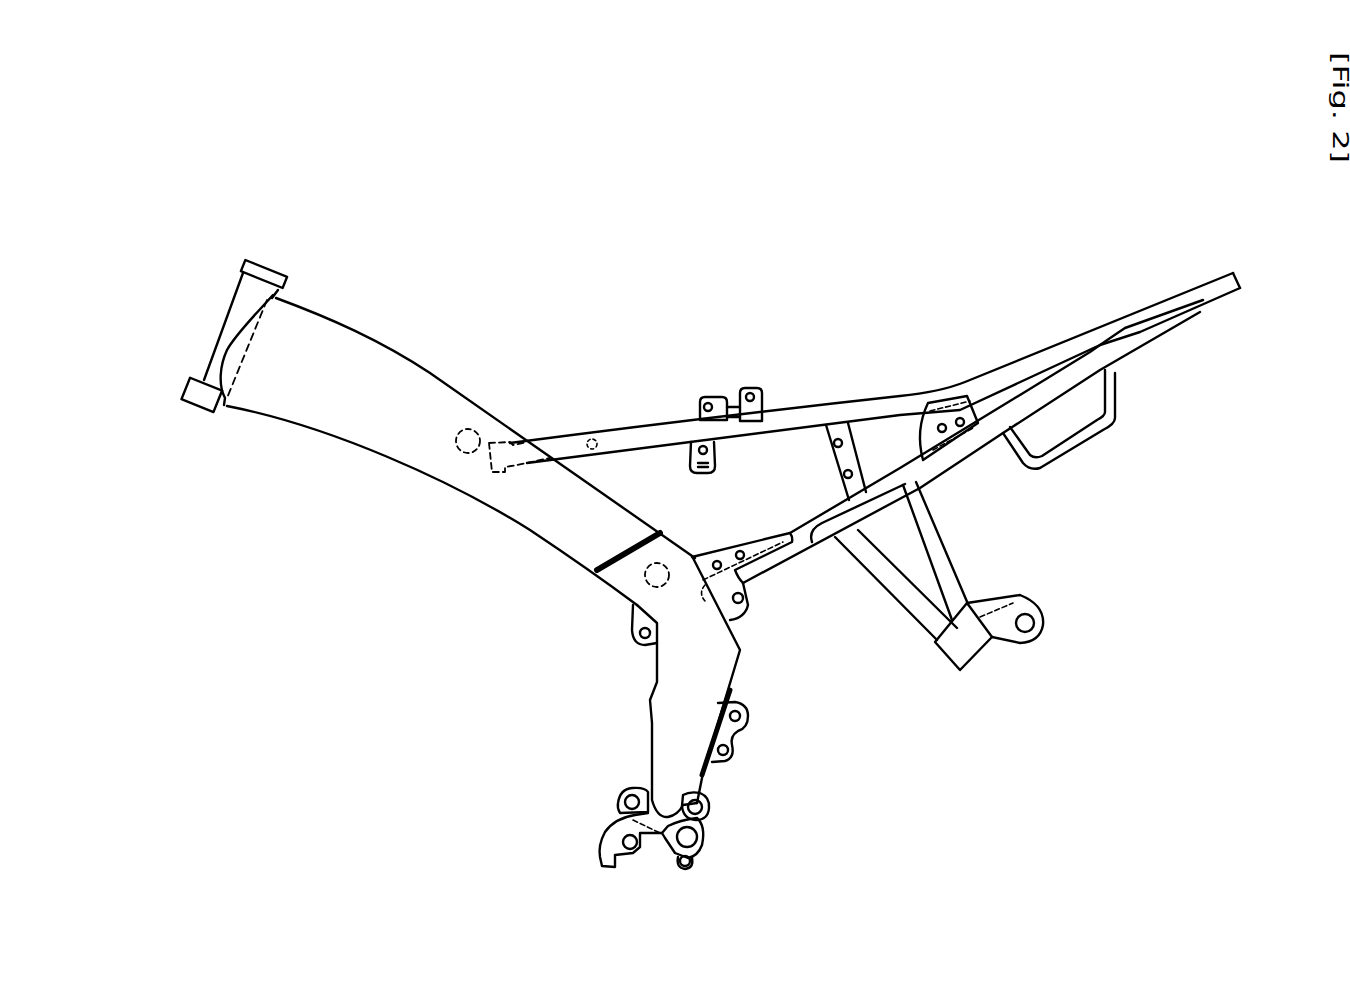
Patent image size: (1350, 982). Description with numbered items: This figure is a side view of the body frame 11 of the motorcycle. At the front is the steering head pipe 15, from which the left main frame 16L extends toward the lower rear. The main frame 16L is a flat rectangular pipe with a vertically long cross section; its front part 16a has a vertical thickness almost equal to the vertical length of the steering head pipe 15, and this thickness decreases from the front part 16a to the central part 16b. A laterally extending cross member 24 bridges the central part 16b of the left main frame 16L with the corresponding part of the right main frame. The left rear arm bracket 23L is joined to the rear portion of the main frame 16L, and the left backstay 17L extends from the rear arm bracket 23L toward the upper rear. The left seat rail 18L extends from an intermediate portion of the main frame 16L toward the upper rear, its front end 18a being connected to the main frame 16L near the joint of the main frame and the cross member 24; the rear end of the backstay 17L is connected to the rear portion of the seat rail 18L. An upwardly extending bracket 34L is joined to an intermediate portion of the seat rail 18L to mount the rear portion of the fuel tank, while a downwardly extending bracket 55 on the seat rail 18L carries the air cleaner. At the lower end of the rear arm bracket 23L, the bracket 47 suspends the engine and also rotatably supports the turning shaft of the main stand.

The body frame 11 is at (724, 280).
The steering head pipe 15 is at (212, 336).
The left main frame 16L is at (378, 370).
The front part of main frame 16a is at (288, 398).
The central part of main frame 16b is at (410, 450).
The left backstay 17L is at (947, 470).
The left seat rail 18L is at (658, 433).
The front end of seat rail 18a is at (507, 472).
The left rear arm bracket 23L is at (675, 688).
The cross member 24 is at (471, 428).
The left bracket 34L is at (750, 388).
The bracket 47 is at (702, 826).
The bracket 55 is at (718, 457).